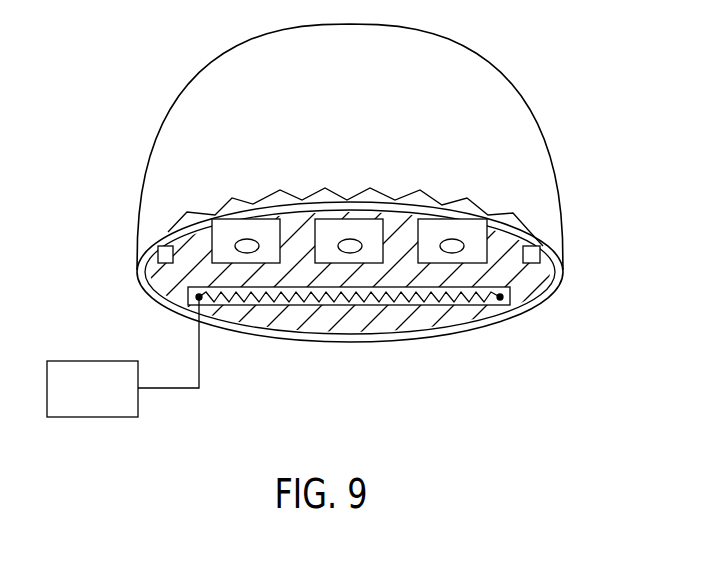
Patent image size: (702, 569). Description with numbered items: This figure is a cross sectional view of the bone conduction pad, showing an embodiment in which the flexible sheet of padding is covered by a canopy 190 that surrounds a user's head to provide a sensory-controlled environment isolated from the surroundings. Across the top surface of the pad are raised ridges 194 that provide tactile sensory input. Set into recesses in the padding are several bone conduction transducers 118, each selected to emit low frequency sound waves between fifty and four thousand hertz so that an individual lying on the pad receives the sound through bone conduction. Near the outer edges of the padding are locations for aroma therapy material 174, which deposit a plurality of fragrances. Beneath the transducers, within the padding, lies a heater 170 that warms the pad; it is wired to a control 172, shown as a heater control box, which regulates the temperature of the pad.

The canopy 190 is at (523, 98).
The raised ridges 194 is at (222, 208).
The bone conduction transducer 118 is at (250, 239).
The aroma therapy material 174 is at (166, 250).
The heater 170 is at (510, 298).
The control 172 is at (92, 417).